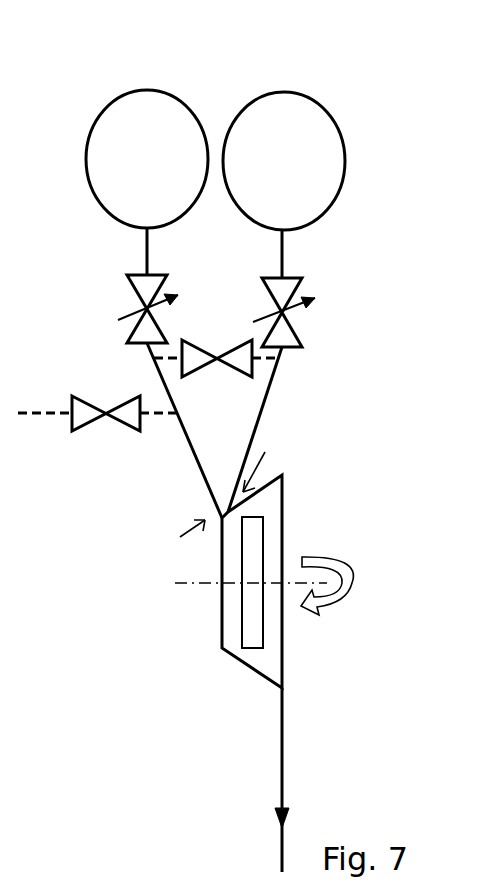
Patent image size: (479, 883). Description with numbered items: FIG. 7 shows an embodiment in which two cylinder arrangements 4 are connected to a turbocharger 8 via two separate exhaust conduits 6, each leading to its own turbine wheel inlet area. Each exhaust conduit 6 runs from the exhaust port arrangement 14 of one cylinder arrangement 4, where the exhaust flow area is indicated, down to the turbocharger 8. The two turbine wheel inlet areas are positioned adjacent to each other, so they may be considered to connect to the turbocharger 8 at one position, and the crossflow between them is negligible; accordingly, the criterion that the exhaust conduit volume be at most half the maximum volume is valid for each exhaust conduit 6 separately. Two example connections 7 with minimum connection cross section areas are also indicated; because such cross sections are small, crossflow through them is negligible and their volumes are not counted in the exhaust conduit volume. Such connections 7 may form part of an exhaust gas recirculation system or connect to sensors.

The cylinder arrangement 4 is at (259, 75).
The exhaust port arrangement 14 is at (267, 305).
The connection 7 is at (157, 362).
The exhaust conduit 6 is at (258, 420).
The turbocharger 8 is at (272, 513).